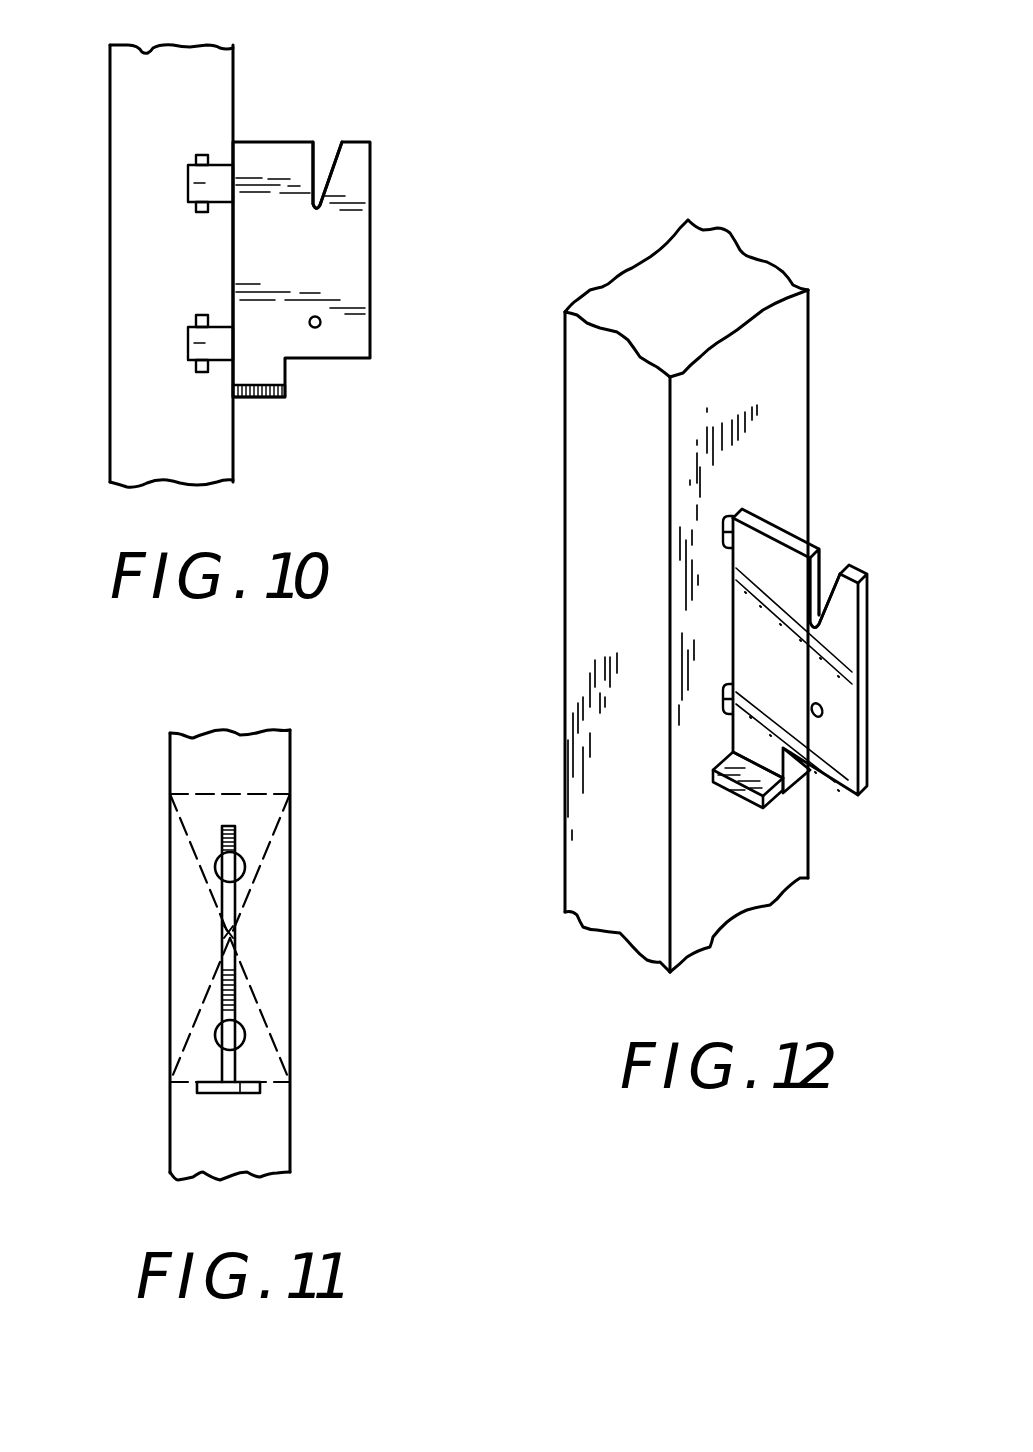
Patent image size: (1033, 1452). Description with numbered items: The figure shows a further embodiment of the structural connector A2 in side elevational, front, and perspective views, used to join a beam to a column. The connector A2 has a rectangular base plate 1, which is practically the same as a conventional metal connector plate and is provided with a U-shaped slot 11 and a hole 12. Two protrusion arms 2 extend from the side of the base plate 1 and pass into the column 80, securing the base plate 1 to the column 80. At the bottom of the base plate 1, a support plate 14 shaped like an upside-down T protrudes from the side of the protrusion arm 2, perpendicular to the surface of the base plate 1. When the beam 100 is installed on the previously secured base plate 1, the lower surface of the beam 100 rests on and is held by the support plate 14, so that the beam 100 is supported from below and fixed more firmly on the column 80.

In FIG. 10, the column 80 is at (132, 115).
In FIG. 11, the column 80 is at (180, 1133).
In FIG. 12, the column 80 is at (577, 578).
In FIG. 10, the protrusion arm 2 is at (188, 190).
In FIG. 11, the protrusion arm 2 is at (230, 951).
In FIG. 12, the protrusion arm 2 is at (728, 615).
In FIG. 10, the base plate 1 is at (347, 232).
In FIG. 11, the base plate 1 is at (247, 975).
In FIG. 12, the base plate 1 is at (843, 643).
In FIG. 10, the structural connector A2 is at (343, 289).
In FIG. 11, the structural connector A2 is at (285, 974).
In FIG. 12, the structural connector A2 is at (824, 668).
In FIG. 10, the U-shaped slot 11 is at (320, 168).
In FIG. 12, the U-shaped slot 11 is at (827, 572).
In FIG. 10, the hole 12 is at (320, 325).
In FIG. 12, the hole 12 is at (822, 714).
In FIG. 10, the support plate 14 is at (285, 362).
In FIG. 11, the support plate 14 is at (242, 1094).
In FIG. 12, the support plate 14 is at (778, 783).
In FIG. 11, the beam 100 is at (193, 850).